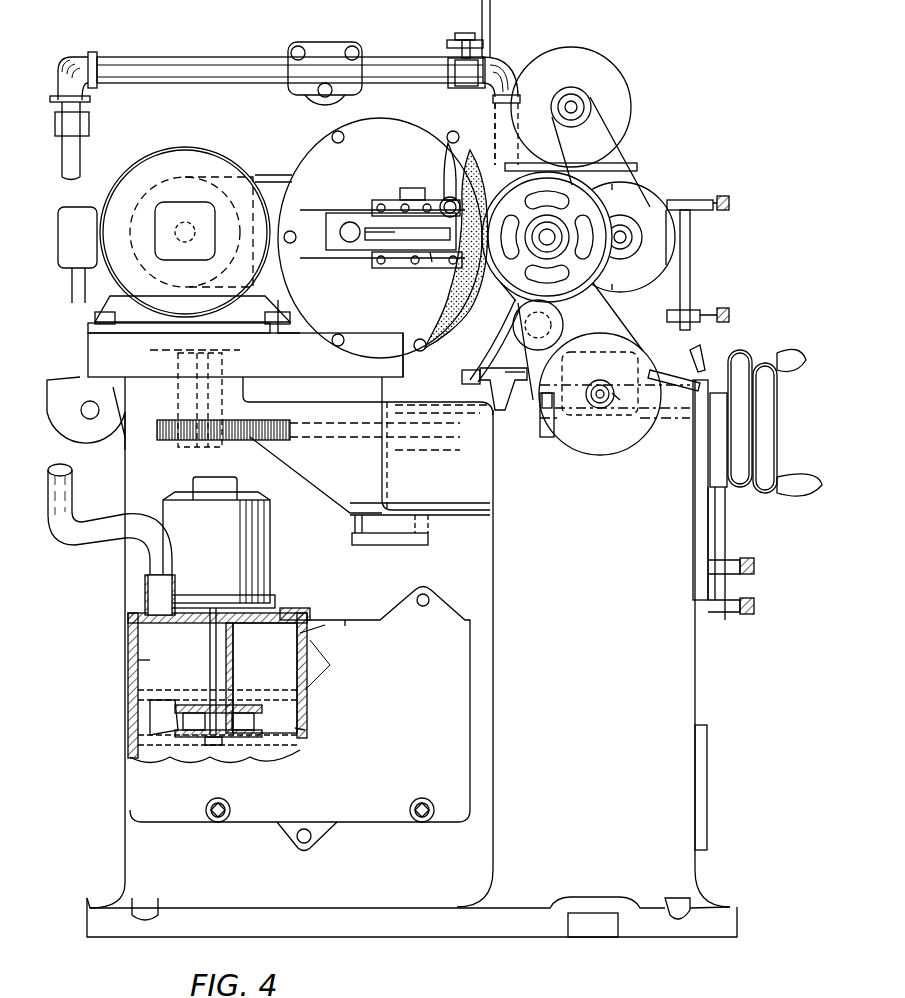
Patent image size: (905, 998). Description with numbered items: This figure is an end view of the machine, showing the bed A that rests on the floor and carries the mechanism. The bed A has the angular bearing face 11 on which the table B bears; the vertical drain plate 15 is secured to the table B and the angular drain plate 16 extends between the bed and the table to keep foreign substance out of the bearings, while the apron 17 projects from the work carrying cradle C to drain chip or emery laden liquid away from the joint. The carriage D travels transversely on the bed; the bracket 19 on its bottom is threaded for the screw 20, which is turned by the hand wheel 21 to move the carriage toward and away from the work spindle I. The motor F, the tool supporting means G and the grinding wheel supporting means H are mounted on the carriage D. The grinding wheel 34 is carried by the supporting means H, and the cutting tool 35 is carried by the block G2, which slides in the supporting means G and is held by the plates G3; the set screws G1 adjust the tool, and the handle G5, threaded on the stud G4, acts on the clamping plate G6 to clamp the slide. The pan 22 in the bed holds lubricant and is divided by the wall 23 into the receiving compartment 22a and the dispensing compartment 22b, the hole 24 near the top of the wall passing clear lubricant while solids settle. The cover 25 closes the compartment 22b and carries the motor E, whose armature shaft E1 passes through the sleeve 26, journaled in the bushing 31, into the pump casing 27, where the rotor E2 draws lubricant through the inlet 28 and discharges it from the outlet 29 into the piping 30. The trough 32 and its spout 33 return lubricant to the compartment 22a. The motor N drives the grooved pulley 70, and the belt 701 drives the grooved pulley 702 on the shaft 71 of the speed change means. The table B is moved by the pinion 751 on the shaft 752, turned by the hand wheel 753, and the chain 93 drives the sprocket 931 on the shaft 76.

The bed A is at (420, 657).
The table B is at (515, 350).
The work carrying member or cradle C is at (512, 312).
The carriage D is at (225, 386).
The motor E is at (216, 542).
The armature shaft E1 is at (212, 620).
The rotor E2 is at (240, 758).
The motor F is at (205, 285).
The tool supporting means G is at (298, 329).
The set screws G1 is at (410, 266).
The block G2 is at (330, 233).
The plates G3 is at (432, 262).
The stud G4 is at (440, 205).
The handle G5 is at (450, 130).
The clamping plate G6 is at (447, 185).
The grinding wheel supporting means H is at (380, 238).
The spindle I is at (612, 215).
The motor N is at (566, 109).
The bearing face 11 is at (525, 412).
The vertical drain plate 15 is at (478, 380).
The angular drain plate 16 is at (695, 395).
The apron 17 is at (475, 370).
The bracket 19 is at (225, 355).
The screw 20 is at (288, 438).
The hand wheel 21 is at (768, 448).
The pan 22 is at (300, 719).
The lubricant receiving compartment 22a is at (350, 622).
The lubricant dispensing compartment 22b is at (298, 730).
The division wall 23 is at (320, 625).
The hole 24 is at (330, 665).
The cover 25 is at (290, 612).
The sleeve 26 is at (261, 678).
The pump casing 27 is at (300, 710).
The inlet 28 is at (222, 755).
The outlet 29 is at (178, 755).
The piping 30 is at (235, 72).
The bushing 31 is at (128, 675).
The trough 32 is at (458, 510).
The spout 33 is at (400, 545).
The grinding wheel 34 is at (448, 325).
The cutting tool 35 is at (370, 230).
The grooved pulley 70 is at (592, 105).
The belt 701 is at (615, 158).
The grooved pulley 702 is at (640, 235).
The shaft 71 is at (640, 250).
The shaft 76 is at (603, 390).
The chain 93 is at (683, 312).
The sprocket 931 is at (587, 345).
The pinion 751 is at (545, 437).
The shaft 752 is at (617, 440).
The hand wheel 753 is at (745, 403).